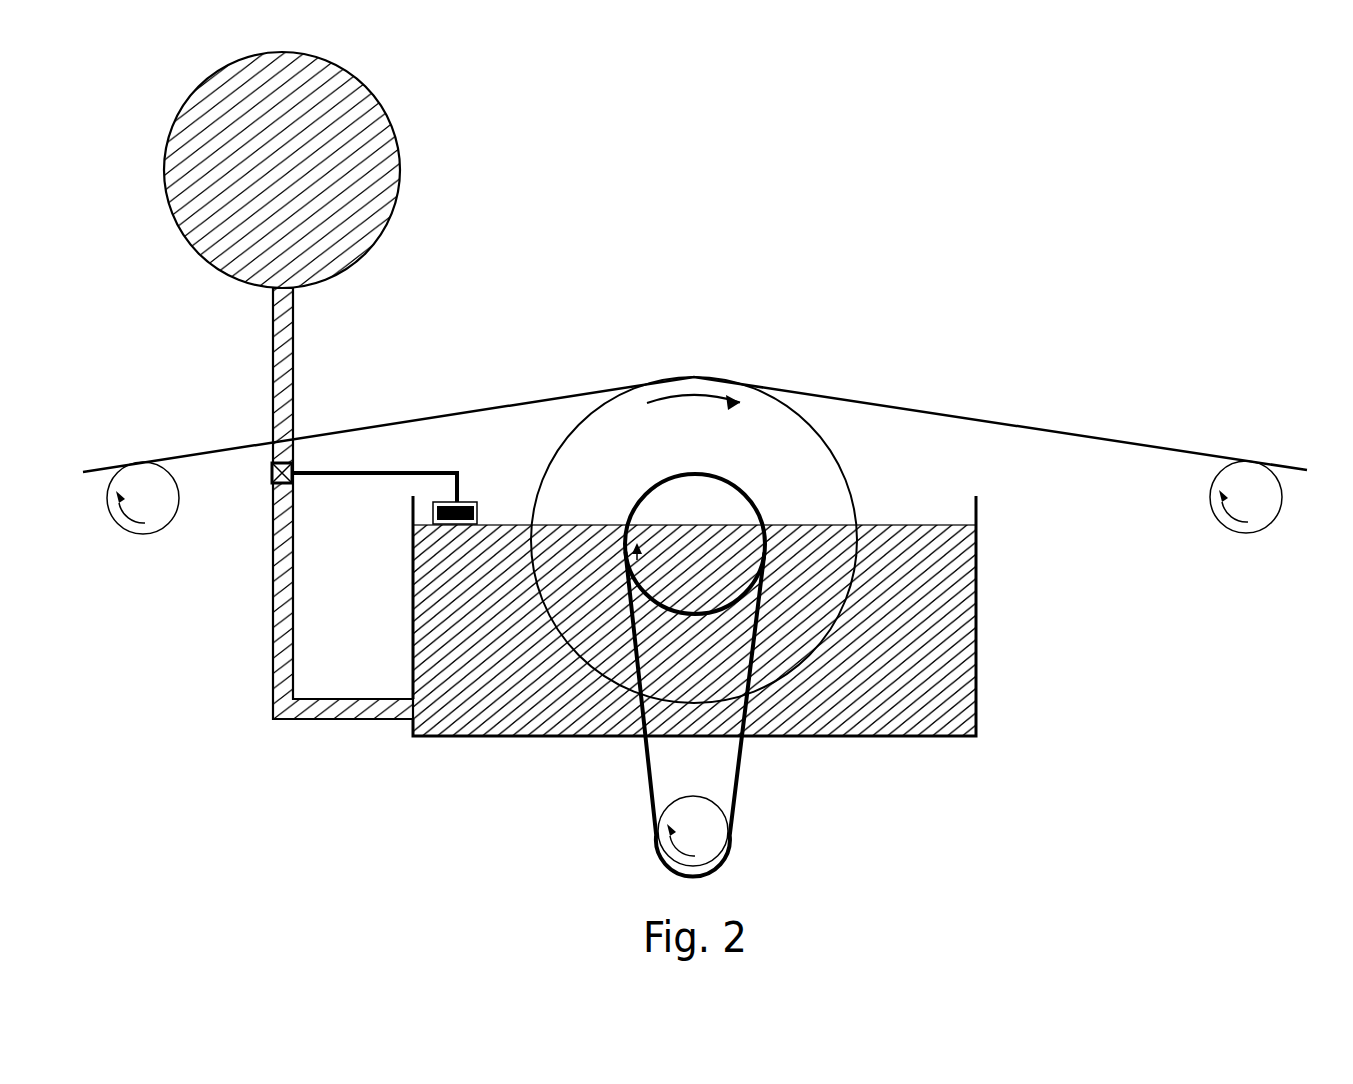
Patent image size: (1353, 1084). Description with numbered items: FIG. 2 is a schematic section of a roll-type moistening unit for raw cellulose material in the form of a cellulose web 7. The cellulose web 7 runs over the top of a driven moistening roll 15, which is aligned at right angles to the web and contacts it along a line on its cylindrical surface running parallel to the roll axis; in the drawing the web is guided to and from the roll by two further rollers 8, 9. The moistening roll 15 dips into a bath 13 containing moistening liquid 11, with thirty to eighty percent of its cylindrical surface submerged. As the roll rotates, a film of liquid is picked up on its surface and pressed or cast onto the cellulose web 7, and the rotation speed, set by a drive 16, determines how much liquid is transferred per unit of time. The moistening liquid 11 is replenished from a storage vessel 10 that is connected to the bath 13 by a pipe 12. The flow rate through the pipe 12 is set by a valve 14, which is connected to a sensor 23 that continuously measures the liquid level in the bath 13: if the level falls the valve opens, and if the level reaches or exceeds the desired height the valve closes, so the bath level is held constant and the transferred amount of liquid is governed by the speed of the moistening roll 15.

The cellulose web 7 is at (217, 450).
The guide roller 8 is at (160, 532).
The guide roller 9 is at (1278, 517).
The storage vessel 10 is at (381, 106).
The moistening liquid 11 is at (313, 200).
The pipe 12 is at (336, 719).
The bath 13 is at (977, 598).
The valve 14 is at (293, 463).
The moistening roll 15 is at (843, 475).
The drive 16 is at (712, 833).
The level sensor 23 is at (468, 502).